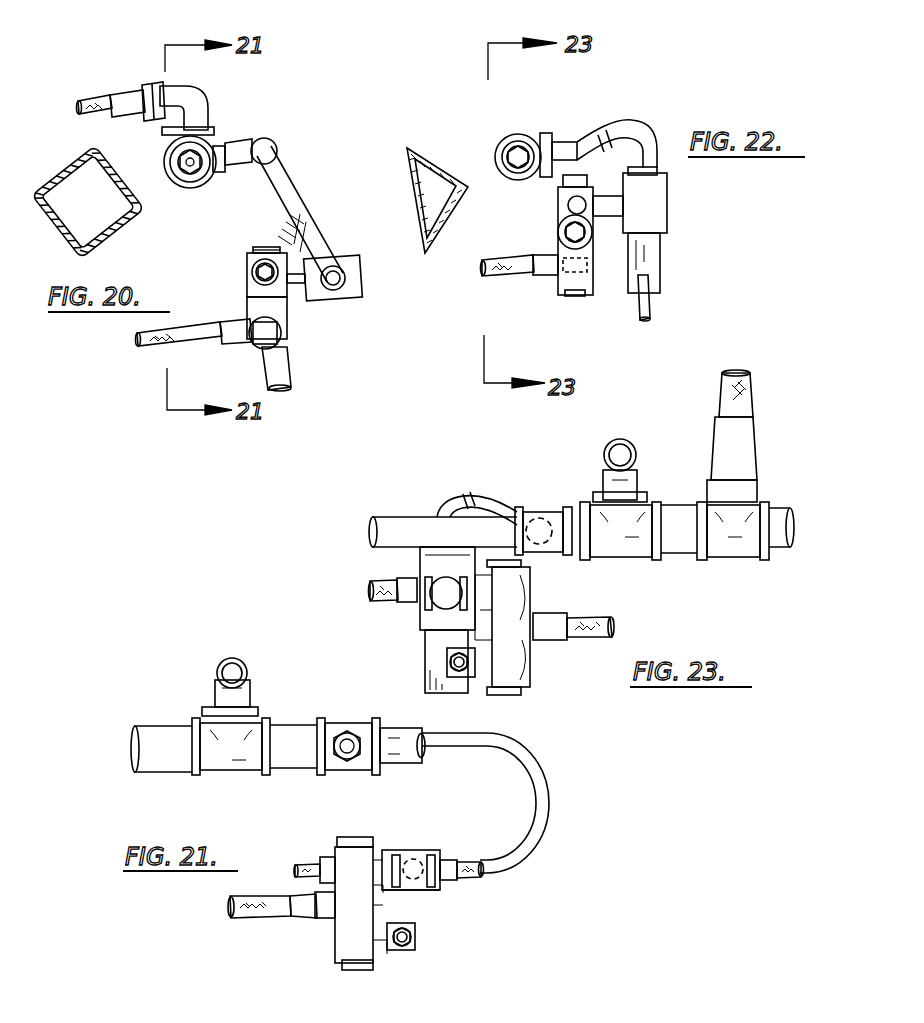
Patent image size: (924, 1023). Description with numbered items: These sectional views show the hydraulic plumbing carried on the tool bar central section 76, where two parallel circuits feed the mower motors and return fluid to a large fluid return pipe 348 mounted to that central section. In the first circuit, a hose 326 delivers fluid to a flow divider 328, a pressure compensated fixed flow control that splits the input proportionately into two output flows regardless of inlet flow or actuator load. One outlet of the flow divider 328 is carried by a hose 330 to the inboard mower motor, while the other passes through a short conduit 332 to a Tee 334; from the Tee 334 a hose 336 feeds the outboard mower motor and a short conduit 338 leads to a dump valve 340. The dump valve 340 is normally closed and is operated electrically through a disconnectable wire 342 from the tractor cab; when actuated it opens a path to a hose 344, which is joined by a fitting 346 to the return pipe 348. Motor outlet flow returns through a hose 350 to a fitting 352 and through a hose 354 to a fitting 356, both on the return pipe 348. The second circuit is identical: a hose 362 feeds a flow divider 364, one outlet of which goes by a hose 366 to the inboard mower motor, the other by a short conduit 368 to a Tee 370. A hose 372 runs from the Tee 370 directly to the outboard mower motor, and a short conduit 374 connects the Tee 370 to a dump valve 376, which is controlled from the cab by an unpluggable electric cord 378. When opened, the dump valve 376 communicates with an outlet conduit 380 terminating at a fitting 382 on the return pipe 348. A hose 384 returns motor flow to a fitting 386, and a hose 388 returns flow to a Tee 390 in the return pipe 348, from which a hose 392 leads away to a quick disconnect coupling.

In FIG. 20, the tool bar central section 76 is at (50, 170).
In FIG. 22, the tool bar central section 76 is at (436, 232).
In FIG. 20, the hose 326 is at (246, 305).
In FIG. 21, the hose 326 is at (251, 916).
In FIG. 20, the flow divider 328 is at (284, 317).
In FIG. 21, the flow divider 328 is at (335, 945).
In FIG. 20, the hose 330 is at (152, 345).
In FIG. 21, the hose 330 is at (400, 950).
In FIG. 21, the short conduit 332 is at (390, 850).
In FIG. 20, the Tee 334 is at (262, 250).
In FIG. 21, the Tee 334 is at (424, 855).
In FIG. 20, the hose 336 is at (248, 262).
In FIG. 22, the hose 336 is at (490, 276).
In FIG. 21, the hose 336 is at (466, 880).
In FIG. 20, the short conduit 338 is at (300, 290).
In FIG. 21, the short conduit 338 is at (416, 893).
In FIG. 20, the dump valve 340 is at (350, 257).
In FIG. 21, the dump valve 340 is at (432, 892).
In FIG. 21, the wire 342 is at (302, 860).
In FIG. 20, the hose 344 is at (303, 197).
In FIG. 21, the hose 344 is at (549, 806).
In FIG. 20, the fitting 346 is at (250, 143).
In FIG. 21, the fitting 346 is at (337, 722).
In FIG. 23, the large fluid return pipe 348 is at (678, 505).
In FIG. 21, the large fluid return pipe 348 is at (160, 726).
In FIG. 20, the hose 350 is at (93, 100).
In FIG. 21, the hose 350 is at (233, 657).
In FIG. 20, the fitting 352 is at (186, 92).
In FIG. 21, the fitting 352 is at (233, 770).
In FIG. 20, the hose 354 is at (176, 180).
In FIG. 21, the hose 354 is at (405, 763).
In FIG. 20, the fitting 356 is at (172, 160).
In FIG. 21, the fitting 356 is at (355, 772).
In FIG. 22, the hose 362 is at (558, 232).
In FIG. 23, the hose 362 is at (602, 637).
In FIG. 22, the flow divider 364 is at (560, 286).
In FIG. 23, the flow divider 364 is at (530, 670).
In FIG. 23, the hose 366 is at (459, 673).
In FIG. 23, the short conduit 368 is at (422, 565).
In FIG. 23, the Tee 370 is at (425, 601).
In FIG. 22, the hose 372 is at (558, 206).
In FIG. 23, the hose 372 is at (370, 591).
In FIG. 22, the short conduit 374 is at (612, 218).
In FIG. 22, the dump valve 376 is at (660, 210).
In FIG. 23, the dump valve 376 is at (425, 666).
In FIG. 22, the electric cord 378 is at (650, 313).
In FIG. 22, the outlet conduit 380 is at (645, 134).
In FIG. 23, the outlet conduit 380 is at (470, 500).
In FIG. 22, the fitting 382 is at (550, 140).
In FIG. 23, the fitting 382 is at (543, 510).
In FIG. 23, the hose 384 is at (630, 446).
In FIG. 23, the fitting 386 is at (625, 545).
In FIG. 22, the hose 388 is at (495, 158).
In FIG. 23, the hose 388 is at (390, 515).
In FIG. 23, the Tee 390 is at (740, 545).
In FIG. 23, the hose 392 is at (752, 386).